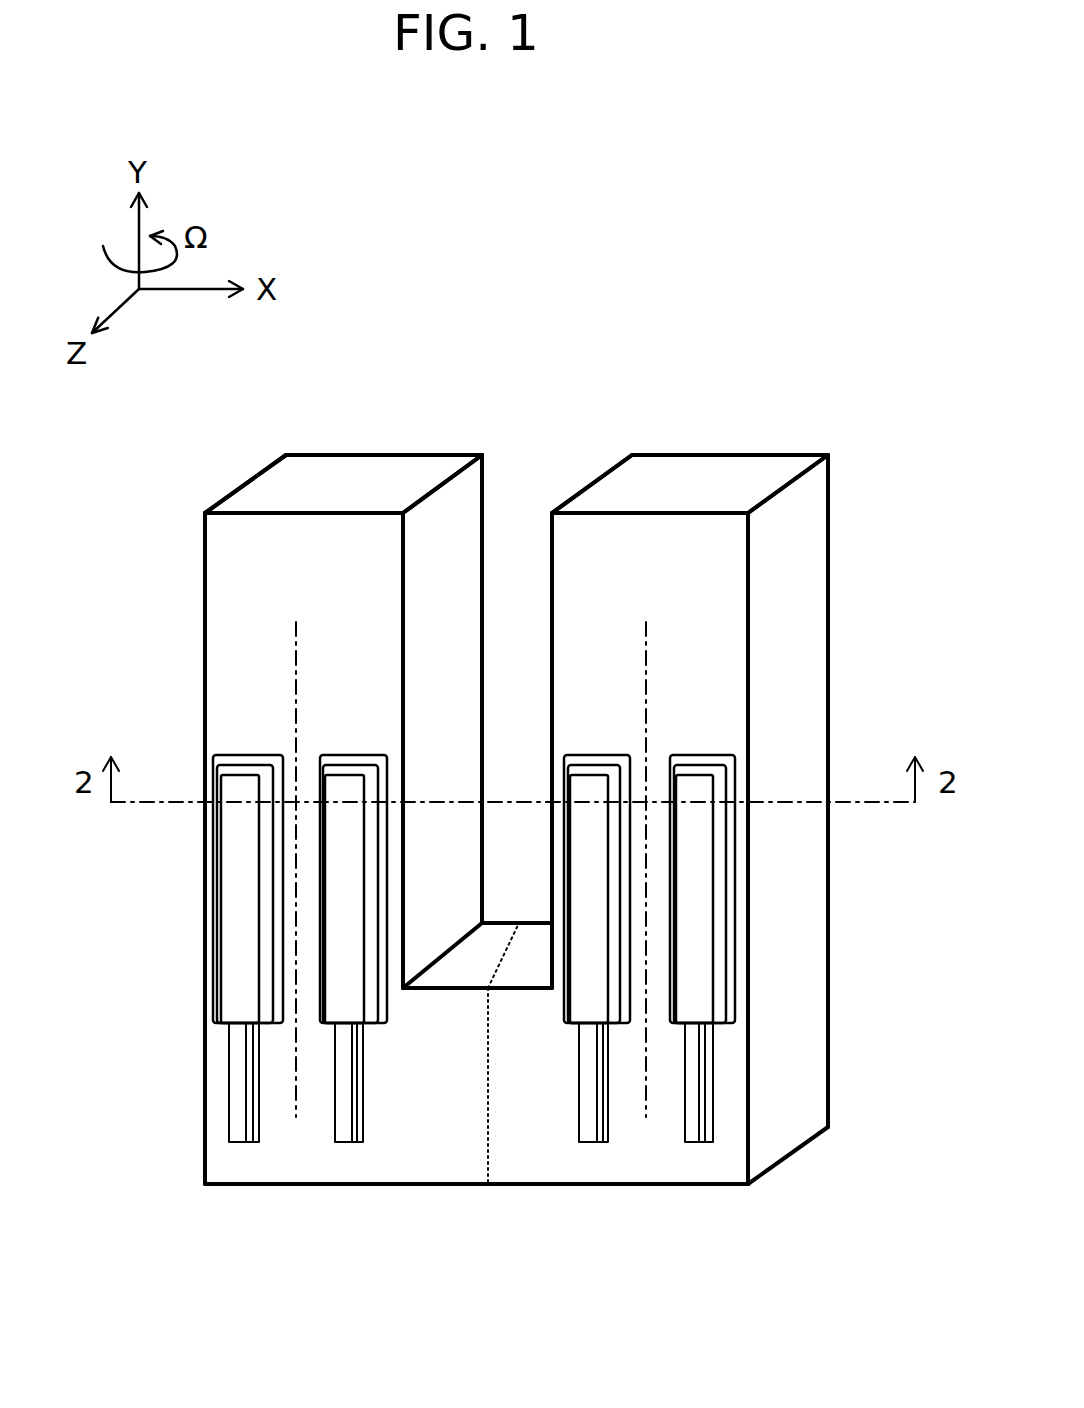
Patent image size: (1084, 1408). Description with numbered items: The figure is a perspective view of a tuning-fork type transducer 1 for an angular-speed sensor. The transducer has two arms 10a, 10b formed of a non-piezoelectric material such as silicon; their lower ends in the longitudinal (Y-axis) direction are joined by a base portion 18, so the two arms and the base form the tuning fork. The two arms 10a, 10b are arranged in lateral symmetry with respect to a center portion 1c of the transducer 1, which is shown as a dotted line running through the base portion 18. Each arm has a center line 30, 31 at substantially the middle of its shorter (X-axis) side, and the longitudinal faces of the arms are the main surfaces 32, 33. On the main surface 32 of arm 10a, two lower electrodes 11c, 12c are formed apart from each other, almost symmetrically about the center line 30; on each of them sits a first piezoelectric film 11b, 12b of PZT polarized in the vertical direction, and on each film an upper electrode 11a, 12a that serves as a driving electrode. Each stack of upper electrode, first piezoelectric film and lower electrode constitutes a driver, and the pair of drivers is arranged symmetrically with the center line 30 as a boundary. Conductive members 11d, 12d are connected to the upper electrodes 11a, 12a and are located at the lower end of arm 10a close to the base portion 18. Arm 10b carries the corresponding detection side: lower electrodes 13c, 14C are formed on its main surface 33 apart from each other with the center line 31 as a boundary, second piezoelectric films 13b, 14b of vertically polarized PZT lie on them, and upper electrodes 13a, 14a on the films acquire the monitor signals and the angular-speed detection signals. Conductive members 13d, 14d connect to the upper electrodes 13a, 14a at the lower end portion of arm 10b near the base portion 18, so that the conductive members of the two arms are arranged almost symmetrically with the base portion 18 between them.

The tuning-fork type transducer 1 is at (738, 437).
The center portion 1c is at (488, 1130).
The arm 10a is at (223, 502).
The arm 10b is at (813, 508).
The upper electrode 11a is at (230, 903).
The first piezoelectric film 11b is at (225, 768).
The lower electrode 11c is at (250, 762).
The conductive member 11d is at (237, 1125).
The upper electrode 12a is at (348, 962).
The first piezoelectric film 12b is at (345, 770).
The lower electrode 12c is at (352, 763).
The conductive member 12d is at (343, 1125).
The upper electrode 13a is at (702, 907).
The second piezoelectric film 13b is at (735, 767).
The lower electrode 13c is at (683, 755).
The conductive member 13d is at (693, 1130).
The upper electrode 14a is at (588, 963).
The second piezoelectric film 14b is at (582, 765).
The lower electrode 14C is at (603, 763).
The conductive member 14d is at (590, 1130).
The base portion 18 is at (429, 1150).
The center line 30 is at (297, 628).
The center line 31 is at (646, 657).
The main surface 32 is at (292, 537).
The main surface 33 is at (662, 548).